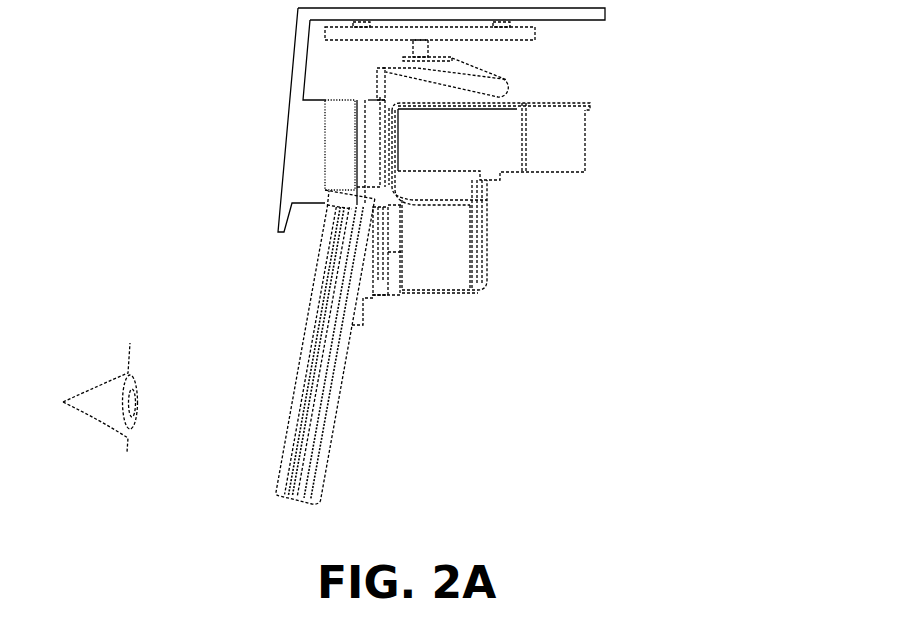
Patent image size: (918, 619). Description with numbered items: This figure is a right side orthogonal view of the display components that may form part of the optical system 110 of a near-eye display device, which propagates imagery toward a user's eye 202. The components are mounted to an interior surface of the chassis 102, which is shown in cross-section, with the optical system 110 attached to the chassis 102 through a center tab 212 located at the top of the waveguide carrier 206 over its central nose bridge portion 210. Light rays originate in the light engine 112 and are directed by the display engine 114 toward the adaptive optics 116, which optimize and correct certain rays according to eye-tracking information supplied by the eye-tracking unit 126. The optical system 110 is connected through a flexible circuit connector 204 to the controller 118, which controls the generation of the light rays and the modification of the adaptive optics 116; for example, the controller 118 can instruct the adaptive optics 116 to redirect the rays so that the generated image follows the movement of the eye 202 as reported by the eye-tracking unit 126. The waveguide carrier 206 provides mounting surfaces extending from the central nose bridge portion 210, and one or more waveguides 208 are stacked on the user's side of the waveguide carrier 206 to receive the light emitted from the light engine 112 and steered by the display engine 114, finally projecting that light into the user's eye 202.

The chassis 102 is at (286, 137).
The controller 118 is at (342, 40).
The flexible circuit connector 204 is at (510, 91).
The center tab 212 is at (326, 174).
The optical system 110 is at (620, 97).
The light engine 112 is at (588, 154).
The display engine 114 is at (485, 245).
The adaptive optics 116 is at (405, 248).
The eye-tracking unit 126 is at (374, 300).
The central nose bridge portion 210 is at (371, 322).
The waveguide carrier 206 is at (327, 468).
The waveguides 208 is at (304, 409).
The user's eye 202 is at (137, 392).